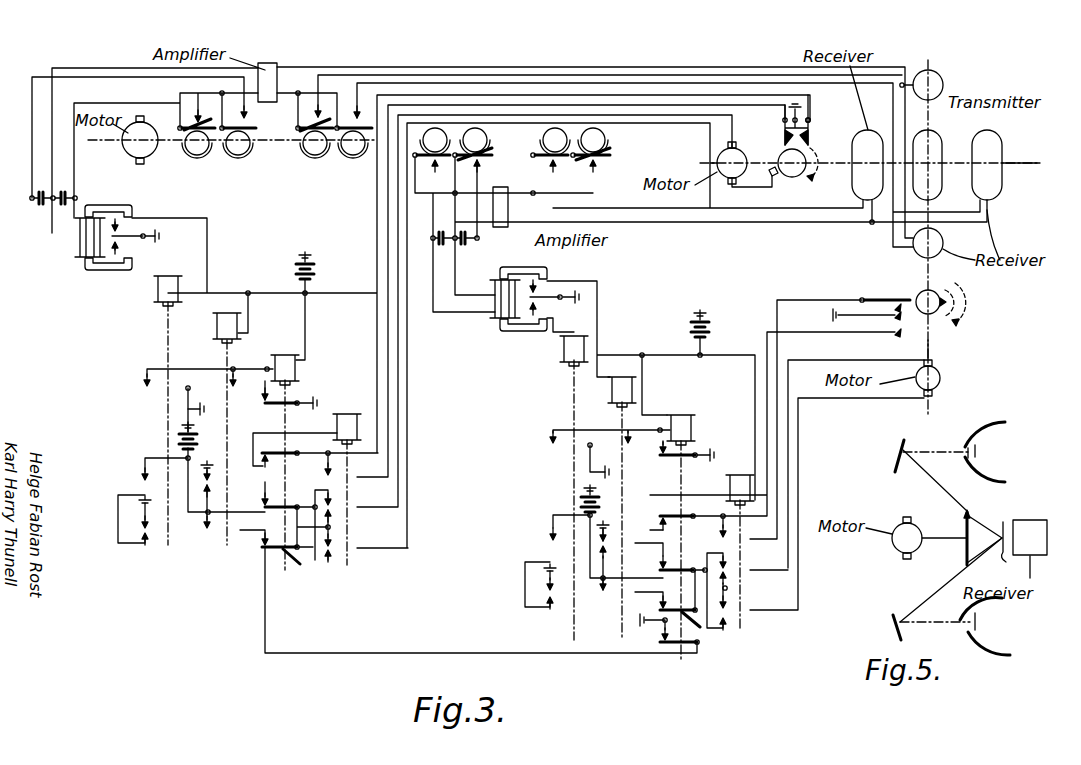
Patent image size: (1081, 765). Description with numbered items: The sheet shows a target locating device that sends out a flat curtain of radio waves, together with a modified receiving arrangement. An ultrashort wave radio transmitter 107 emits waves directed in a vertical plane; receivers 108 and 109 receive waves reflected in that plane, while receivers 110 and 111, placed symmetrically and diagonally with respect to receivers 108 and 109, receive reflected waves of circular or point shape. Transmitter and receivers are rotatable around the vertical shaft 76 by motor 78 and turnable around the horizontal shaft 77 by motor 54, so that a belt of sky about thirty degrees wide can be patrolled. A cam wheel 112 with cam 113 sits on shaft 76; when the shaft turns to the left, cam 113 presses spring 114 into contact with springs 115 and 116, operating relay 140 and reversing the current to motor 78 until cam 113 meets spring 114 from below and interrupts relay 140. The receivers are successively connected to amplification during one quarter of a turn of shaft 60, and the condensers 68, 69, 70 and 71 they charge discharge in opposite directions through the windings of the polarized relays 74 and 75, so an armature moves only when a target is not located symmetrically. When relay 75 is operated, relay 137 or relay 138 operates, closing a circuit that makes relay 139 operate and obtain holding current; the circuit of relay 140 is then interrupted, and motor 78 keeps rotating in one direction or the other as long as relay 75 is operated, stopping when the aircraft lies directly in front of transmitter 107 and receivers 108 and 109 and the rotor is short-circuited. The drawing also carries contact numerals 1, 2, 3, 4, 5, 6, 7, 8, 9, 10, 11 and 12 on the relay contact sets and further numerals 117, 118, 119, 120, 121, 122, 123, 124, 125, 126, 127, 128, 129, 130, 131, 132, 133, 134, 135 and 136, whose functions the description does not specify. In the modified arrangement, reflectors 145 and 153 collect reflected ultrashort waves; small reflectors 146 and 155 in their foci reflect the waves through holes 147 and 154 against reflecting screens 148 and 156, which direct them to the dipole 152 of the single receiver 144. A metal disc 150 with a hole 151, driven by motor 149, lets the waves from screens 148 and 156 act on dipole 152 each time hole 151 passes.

In FIG. 3, the contact 1 is at (474, 417).
In FIG. 3, the contact 2 is at (268, 407).
In FIG. 3, the contact 3 is at (280, 448).
In FIG. 3, the contact 4 is at (278, 456).
In FIG. 3, the contact 5 is at (280, 494).
In FIG. 3, the contact 6 is at (266, 501).
In FIG. 3, the contact 7 is at (274, 510).
In FIG. 3, the contact 8 is at (262, 538).
In FIG. 3, the contact 9 is at (491, 584).
In FIG. 3, the contact 10 is at (264, 551).
In FIG. 3, the contact 11 is at (664, 630).
In FIG. 3, the contact 12 is at (694, 642).
In FIG. 3, the motor 54 is at (745, 150).
In FIG. 3, the shaft 60 is at (128, 156).
In FIG. 3, the condenser 68 is at (42, 189).
In FIG. 3, the condenser 69 is at (64, 189).
In FIG. 3, the condenser 70 is at (443, 247).
In FIG. 3, the condenser 71 is at (466, 247).
In FIG. 3, the polarized relay 74 is at (83, 240).
In FIG. 3, the polarized relay 75 is at (495, 310).
In FIG. 3, the vertical shaft 76 is at (932, 352).
In FIG. 3, the horizontal shaft 77 is at (1012, 163).
In FIG. 3, the motor 78 is at (940, 380).
In FIG. 3, the ultrashort wave radio transmitter 107 is at (936, 135).
In FIG. 3, the receiver 108 is at (869, 165).
In FIG. 3, the receiver 109 is at (996, 133).
In FIG. 3, the receiver 110 is at (942, 84).
In FIG. 3, the receiver 111 is at (943, 243).
In FIG. 3, the cam wheel 112 is at (936, 295).
In FIG. 3, the cam 113 is at (948, 315).
In FIG. 3, the spring 114 is at (885, 294).
In FIG. 3, the spring 115 is at (892, 318).
In FIG. 3, the spring 116 is at (893, 335).
In FIG. 3, the contact disc 117 is at (786, 176).
In FIG. 3, the contact 118 is at (770, 178).
In FIG. 3, the contact 119 is at (780, 135).
In FIG. 3, the contact 120 is at (811, 122).
In FIG. 3, the contact 121 is at (810, 138).
In FIG. 3, the relay 122 is at (609, 144).
In FIG. 3, the relay 123 is at (568, 142).
In FIG. 3, the relay 124 is at (489, 144).
In FIG. 3, the relay 125 is at (448, 142).
In FIG. 3, the amplifier 126 is at (508, 214).
In FIG. 3, the relay 127 is at (353, 151).
In FIG. 3, the relay 128 is at (314, 147).
In FIG. 3, the relay 129 is at (238, 151).
In FIG. 3, the relay 130 is at (196, 147).
In FIG. 3, the amplifier 131 is at (278, 70).
In FIG. 3, the relay 132 is at (156, 296).
In FIG. 3, the relay 133 is at (214, 331).
In FIG. 3, the relay 134 is at (280, 356).
In FIG. 3, the relay 135 is at (345, 413).
In FIG. 3, the battery 136 is at (315, 273).
In FIG. 3, the relay 137 is at (560, 352).
In FIG. 3, the relay 138 is at (608, 391).
In FIG. 3, the relay 139 is at (668, 426).
In FIG. 3, the relay 140 is at (726, 484).
In FIG. 5, the receiver 144 is at (1030, 537).
In FIG. 5, the reflector 145 is at (985, 430).
In FIG. 5, the small reflector 146 is at (978, 451).
In FIG. 5, the hole 147 is at (965, 454).
In FIG. 5, the reflecting screen 148 is at (897, 470).
In FIG. 5, the motor 149 is at (895, 554).
In FIG. 5, the metal disc 150 is at (966, 552).
In FIG. 5, the hole 151 is at (970, 513).
In FIG. 5, the dipole 152 is at (993, 555).
In FIG. 5, the reflector 153 is at (996, 603).
In FIG. 5, the hole 154 is at (951, 580).
In FIG. 5, the small reflector 155 is at (980, 630).
In FIG. 5, the reflecting screen 156 is at (893, 626).